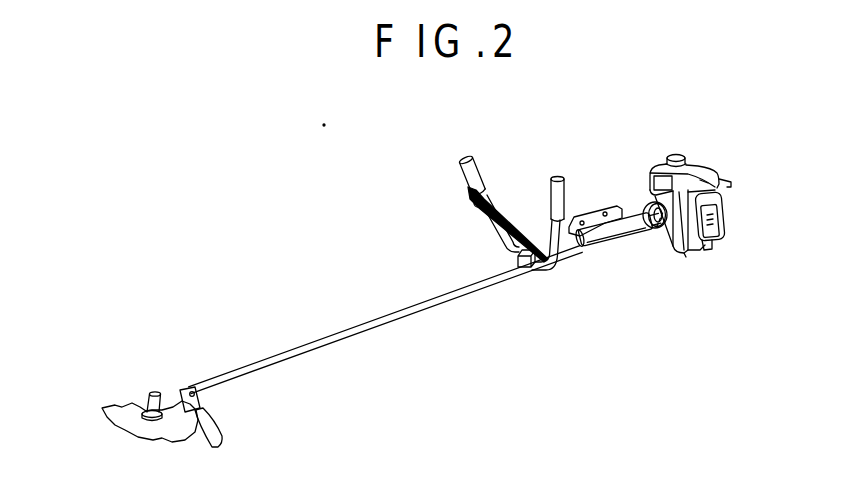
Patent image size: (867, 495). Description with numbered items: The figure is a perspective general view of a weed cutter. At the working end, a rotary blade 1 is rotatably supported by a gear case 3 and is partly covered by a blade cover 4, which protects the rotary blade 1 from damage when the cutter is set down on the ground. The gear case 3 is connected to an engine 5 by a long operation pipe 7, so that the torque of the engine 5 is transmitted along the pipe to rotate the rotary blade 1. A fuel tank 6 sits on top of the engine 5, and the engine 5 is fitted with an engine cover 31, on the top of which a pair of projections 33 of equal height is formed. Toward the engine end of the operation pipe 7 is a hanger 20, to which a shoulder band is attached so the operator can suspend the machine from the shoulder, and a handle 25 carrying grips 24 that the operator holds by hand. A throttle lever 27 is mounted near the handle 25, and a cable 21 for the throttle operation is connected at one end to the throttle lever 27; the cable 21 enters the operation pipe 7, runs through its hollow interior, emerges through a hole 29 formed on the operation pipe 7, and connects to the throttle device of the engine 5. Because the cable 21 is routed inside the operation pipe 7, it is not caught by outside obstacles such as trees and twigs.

The rotary blade 1 is at (138, 428).
The gear case 3 is at (157, 389).
The blade cover 4 is at (217, 437).
The engine 5 is at (704, 217).
The fuel tank 6 is at (662, 164).
The operation pipe 7 is at (297, 352).
The hanger 20 is at (597, 211).
The cable 21 is at (494, 196).
The grips 24 is at (466, 177).
The handle 25 is at (497, 238).
The throttle lever 27 is at (469, 193).
The hole 29 is at (657, 226).
The engine cover 31 is at (681, 254).
The projections 33 is at (708, 248).